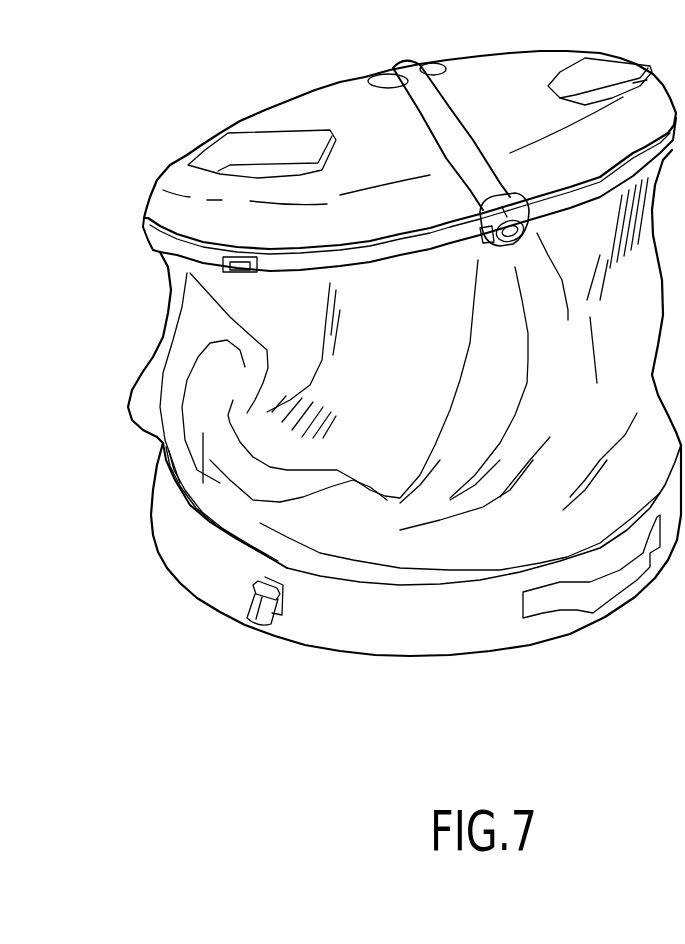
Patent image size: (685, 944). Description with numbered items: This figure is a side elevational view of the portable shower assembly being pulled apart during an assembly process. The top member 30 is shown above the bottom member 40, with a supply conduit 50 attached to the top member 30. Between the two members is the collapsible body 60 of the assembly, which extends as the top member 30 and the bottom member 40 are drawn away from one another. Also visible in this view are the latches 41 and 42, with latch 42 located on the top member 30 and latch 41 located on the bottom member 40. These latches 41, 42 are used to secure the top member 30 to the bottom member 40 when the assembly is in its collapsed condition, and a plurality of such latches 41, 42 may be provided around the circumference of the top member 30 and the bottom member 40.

The top member 30 is at (166, 167).
The bottom member 40 is at (455, 637).
The latch 41 is at (283, 617).
The latch 42 is at (232, 268).
The supply conduit 50 is at (498, 245).
The collapsible bag 60 is at (140, 393).